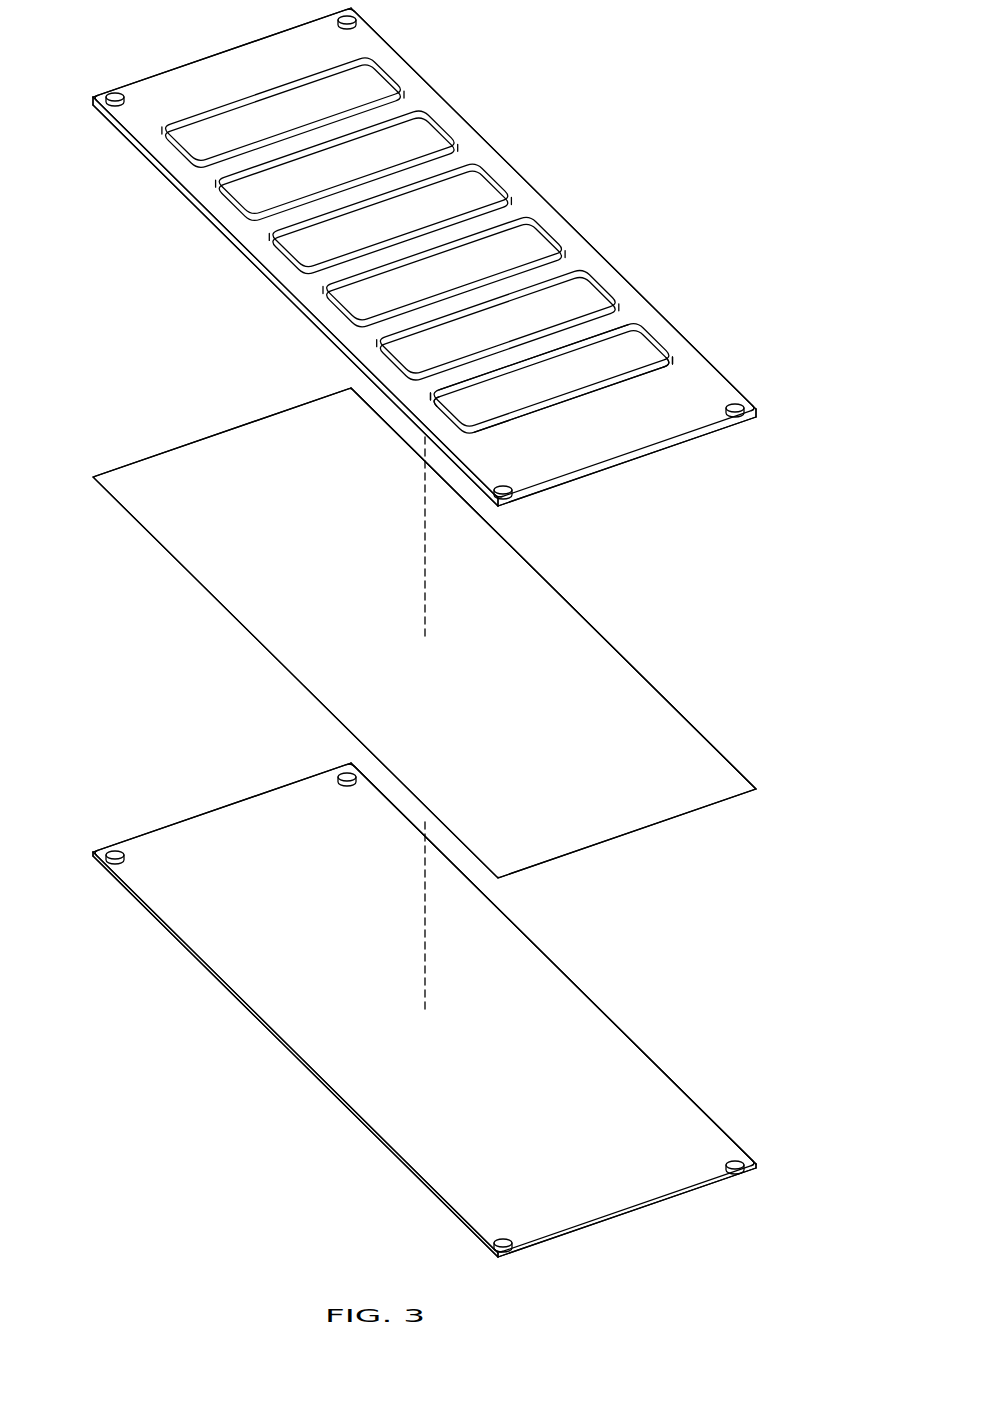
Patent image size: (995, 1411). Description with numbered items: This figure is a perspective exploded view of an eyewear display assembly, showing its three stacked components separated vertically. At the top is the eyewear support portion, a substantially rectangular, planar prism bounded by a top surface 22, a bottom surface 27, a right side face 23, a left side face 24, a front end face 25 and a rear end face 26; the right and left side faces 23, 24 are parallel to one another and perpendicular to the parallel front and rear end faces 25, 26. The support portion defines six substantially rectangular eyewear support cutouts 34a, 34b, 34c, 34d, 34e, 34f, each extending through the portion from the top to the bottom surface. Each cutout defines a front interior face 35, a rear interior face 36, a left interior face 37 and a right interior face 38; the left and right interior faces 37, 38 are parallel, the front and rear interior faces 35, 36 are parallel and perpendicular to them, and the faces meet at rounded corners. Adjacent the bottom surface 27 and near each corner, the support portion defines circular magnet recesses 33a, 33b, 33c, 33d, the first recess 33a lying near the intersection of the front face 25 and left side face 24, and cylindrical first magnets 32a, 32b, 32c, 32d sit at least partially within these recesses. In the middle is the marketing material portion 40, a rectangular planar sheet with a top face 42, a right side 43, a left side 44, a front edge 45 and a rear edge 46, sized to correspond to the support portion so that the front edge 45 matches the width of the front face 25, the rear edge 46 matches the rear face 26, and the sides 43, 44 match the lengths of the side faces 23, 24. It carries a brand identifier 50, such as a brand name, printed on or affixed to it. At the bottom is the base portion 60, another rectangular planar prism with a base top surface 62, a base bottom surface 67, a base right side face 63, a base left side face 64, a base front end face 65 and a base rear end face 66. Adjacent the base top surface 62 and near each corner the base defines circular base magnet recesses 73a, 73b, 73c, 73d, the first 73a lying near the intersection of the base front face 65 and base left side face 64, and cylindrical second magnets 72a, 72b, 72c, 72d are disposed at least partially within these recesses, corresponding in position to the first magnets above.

The top surface 22 is at (515, 205).
The right side face 23 is at (558, 208).
The left side face 24 is at (262, 268).
The front end face 25 is at (638, 460).
The rear end face 26 is at (222, 53).
The bottom surface 27 is at (235, 238).
The first magnet 32a is at (508, 486).
The first magnet 32b is at (740, 405).
The first magnet 32c is at (112, 94).
The first magnet 32d is at (339, 18).
The first magnet recess 33a is at (510, 502).
The magnet recess 33b is at (742, 420).
The magnet recess 33c is at (99, 105).
The magnet recess 33d is at (357, 22).
The eyewear support cutout 34a is at (653, 332).
The eyewear support cutout 34b is at (598, 282).
The eyewear support cutout 34c is at (548, 230).
The eyewear support cutout 34d is at (495, 179).
The eyewear support cutout 34e is at (445, 124).
The eyewear support cutout 34f is at (396, 80).
The front interior face 35 is at (563, 397).
The rear interior face 36 is at (530, 358).
The left interior face 37 is at (443, 418).
The right interior face 38 is at (650, 345).
The marketing material portion 40 is at (580, 646).
The top face 42 is at (467, 636).
The right side 43 is at (528, 563).
The left side 44 is at (272, 654).
The front edge 45 is at (620, 838).
The rear edge 46 is at (226, 431).
The brand identifier 50 is at (655, 801).
The base portion 60 is at (580, 1019).
The base top surface 62 is at (467, 1009).
The base right side face 63 is at (528, 937).
The base left side face 64 is at (262, 1021).
The base front end face 65 is at (640, 1214).
The base rear end face 66 is at (222, 808).
The base bottom surface 67 is at (229, 989).
The second magnet 72a is at (508, 1240).
The second magnet 72b is at (740, 1162).
The second magnet 72c is at (112, 852).
The second magnet 72d is at (339, 775).
The first base magnet recess 73a is at (510, 1259).
The base magnet recess 73b is at (742, 1178).
The base magnet recess 73c is at (100, 862).
The base magnet recess 73d is at (350, 787).